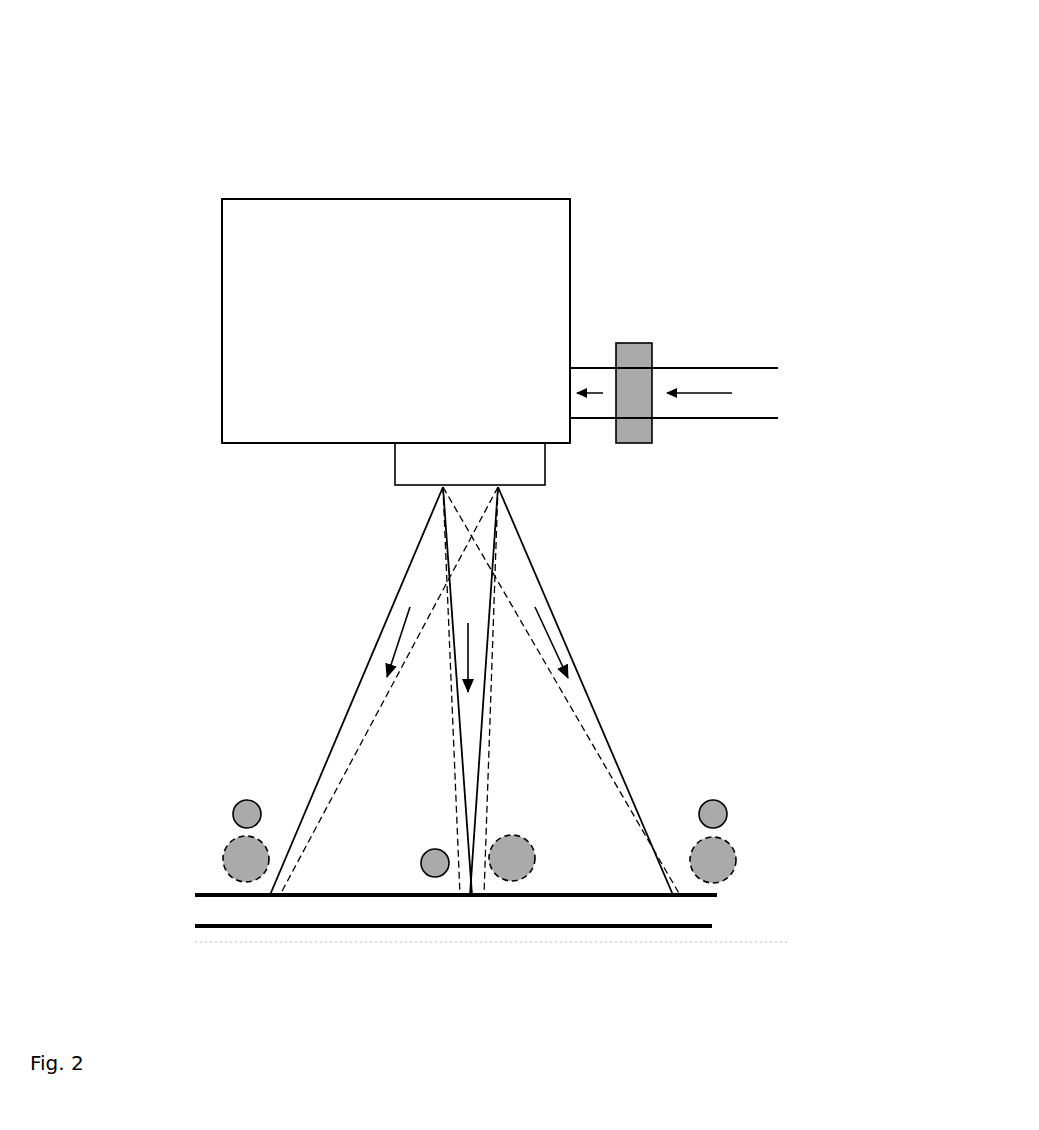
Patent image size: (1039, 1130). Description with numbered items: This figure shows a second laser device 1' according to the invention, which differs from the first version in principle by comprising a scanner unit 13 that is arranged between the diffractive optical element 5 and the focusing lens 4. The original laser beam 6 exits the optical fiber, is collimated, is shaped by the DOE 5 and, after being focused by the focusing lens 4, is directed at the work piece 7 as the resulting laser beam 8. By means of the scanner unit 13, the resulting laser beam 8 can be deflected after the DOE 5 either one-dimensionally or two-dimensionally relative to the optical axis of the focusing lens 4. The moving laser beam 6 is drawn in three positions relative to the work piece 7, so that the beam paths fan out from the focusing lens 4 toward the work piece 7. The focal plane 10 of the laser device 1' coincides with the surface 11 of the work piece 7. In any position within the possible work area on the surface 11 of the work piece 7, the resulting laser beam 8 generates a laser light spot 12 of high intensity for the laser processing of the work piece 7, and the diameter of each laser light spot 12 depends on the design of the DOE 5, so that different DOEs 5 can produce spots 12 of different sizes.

The laser device 1' is at (178, 83).
The scanner unit 13 is at (396, 279).
The focusing lens 4 is at (380, 488).
The diffractive optical element 5 is at (699, 347).
The original laser beam 6 is at (719, 435).
The resulting laser beam 8 is at (423, 588).
The laser light spot 12 is at (540, 1008).
The focal plane 10 is at (399, 864).
The surface 11 is at (470, 957).
The work piece 7 is at (492, 958).